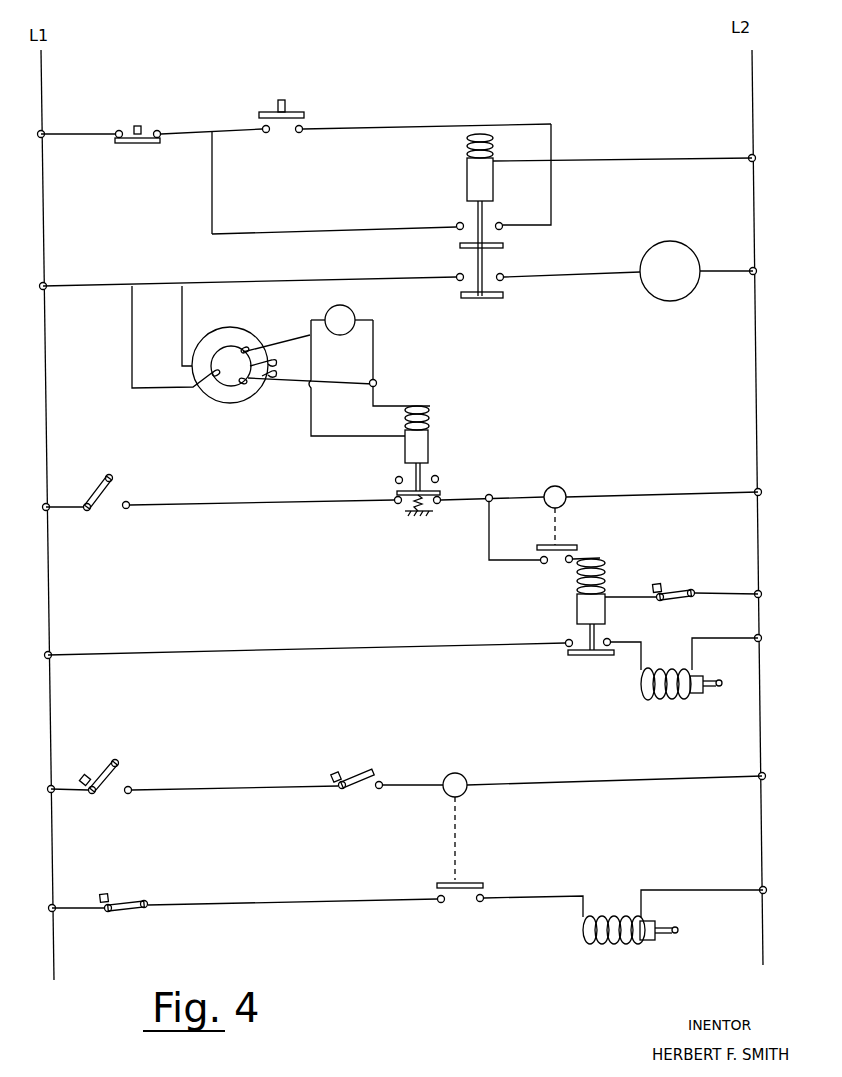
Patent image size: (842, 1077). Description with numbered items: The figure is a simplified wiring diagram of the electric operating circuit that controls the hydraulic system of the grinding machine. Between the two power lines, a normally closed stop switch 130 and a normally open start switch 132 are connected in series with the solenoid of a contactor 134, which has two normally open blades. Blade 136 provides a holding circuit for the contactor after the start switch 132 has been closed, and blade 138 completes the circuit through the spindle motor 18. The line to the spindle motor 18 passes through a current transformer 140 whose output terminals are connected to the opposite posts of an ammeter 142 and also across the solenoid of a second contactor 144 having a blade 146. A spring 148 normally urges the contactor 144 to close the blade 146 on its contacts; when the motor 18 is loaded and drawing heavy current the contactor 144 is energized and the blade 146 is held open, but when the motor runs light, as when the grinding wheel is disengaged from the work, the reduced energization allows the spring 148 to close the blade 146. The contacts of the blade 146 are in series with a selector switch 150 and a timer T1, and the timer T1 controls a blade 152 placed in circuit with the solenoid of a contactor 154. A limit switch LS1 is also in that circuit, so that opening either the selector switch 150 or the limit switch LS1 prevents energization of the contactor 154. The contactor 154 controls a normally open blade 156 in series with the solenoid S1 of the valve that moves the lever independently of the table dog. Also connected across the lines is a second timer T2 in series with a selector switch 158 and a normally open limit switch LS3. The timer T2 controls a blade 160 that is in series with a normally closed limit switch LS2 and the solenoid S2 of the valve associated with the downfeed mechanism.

The spindle motor 18 is at (688, 256).
The stop switch 130 is at (148, 126).
The start switch 132 is at (285, 104).
The contactor 134 is at (487, 153).
The blade 136 is at (505, 246).
The blade 138 is at (505, 296).
The current transformer 140 is at (240, 330).
The ammeter 142 is at (356, 328).
The contactor 144 is at (423, 443).
The blade 146 is at (440, 492).
The spring 148 is at (400, 508).
The selector switch 150 is at (115, 477).
The blade 152 is at (572, 548).
The contactor 154 is at (580, 609).
The blade 156 is at (584, 657).
The selector switch 158 is at (121, 766).
The blade 160 is at (478, 886).
The timer T1 is at (555, 497).
The timer T2 is at (455, 785).
The limit switch LS1 is at (672, 592).
The limit switch LS2 is at (112, 904).
The limit switch LS3 is at (354, 776).
The solenoid S1 is at (681, 698).
The solenoid S2 is at (630, 945).